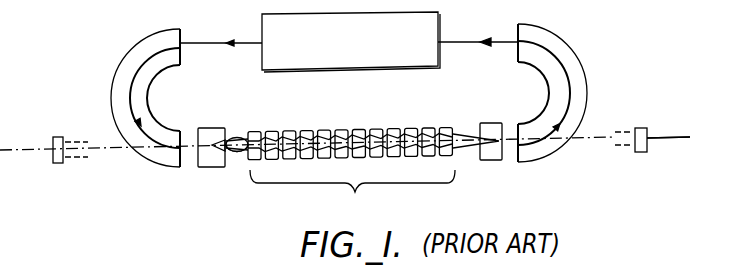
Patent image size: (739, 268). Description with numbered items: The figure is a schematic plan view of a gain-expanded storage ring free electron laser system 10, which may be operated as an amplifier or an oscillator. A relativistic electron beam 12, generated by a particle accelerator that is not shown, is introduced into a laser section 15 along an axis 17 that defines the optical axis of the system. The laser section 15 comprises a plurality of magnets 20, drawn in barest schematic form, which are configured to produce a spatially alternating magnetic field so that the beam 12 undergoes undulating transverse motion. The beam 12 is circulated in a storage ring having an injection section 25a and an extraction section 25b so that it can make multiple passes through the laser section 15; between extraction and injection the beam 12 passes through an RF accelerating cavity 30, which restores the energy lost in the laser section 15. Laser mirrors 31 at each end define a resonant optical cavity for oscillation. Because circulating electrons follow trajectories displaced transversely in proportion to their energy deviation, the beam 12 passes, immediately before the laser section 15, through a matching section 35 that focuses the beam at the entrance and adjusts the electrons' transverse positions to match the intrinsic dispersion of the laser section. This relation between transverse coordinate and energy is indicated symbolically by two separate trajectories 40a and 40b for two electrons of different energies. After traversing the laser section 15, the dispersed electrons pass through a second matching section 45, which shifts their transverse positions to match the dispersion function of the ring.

The storage ring free electron laser system 10 is at (493, 184).
The relativistic electron beam 12 is at (205, 43).
The laser section 15 is at (357, 192).
The axis 17 is at (674, 137).
The magnets 20 is at (358, 128).
The injection section 25a is at (127, 56).
The extraction section 25b is at (576, 54).
The RF accelerating cavity 30 is at (438, 12).
The laser mirrors 31 is at (59, 164).
The matching section 35 is at (211, 128).
The trajectory 40a is at (240, 137).
The trajectory 40b is at (240, 152).
The second matching section 45 is at (488, 123).